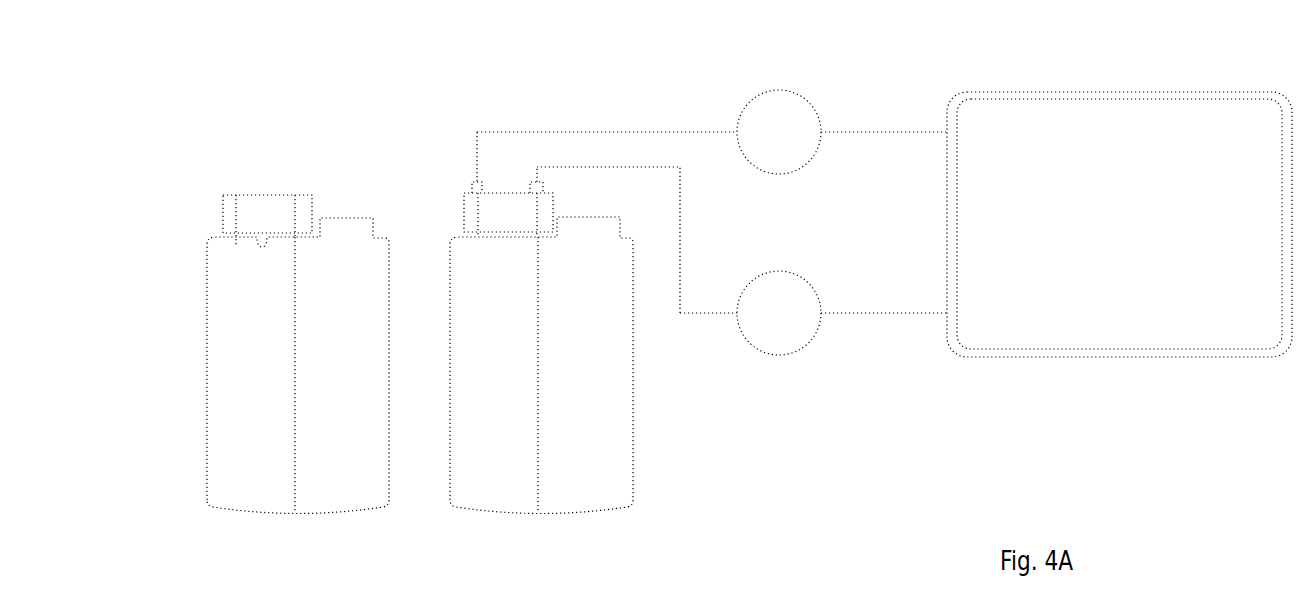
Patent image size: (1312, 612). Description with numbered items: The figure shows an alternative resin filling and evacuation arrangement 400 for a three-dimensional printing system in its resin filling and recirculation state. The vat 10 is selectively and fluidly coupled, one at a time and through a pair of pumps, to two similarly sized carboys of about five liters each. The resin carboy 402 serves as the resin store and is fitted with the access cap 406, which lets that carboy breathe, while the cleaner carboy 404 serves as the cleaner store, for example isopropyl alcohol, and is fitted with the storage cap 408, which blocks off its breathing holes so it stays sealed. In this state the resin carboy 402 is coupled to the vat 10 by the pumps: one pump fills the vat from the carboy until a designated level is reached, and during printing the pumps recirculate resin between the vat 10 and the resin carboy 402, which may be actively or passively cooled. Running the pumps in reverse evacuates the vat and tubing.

The resin filling and evacuation arrangement 400 is at (1074, 45).
The vat 10 is at (1128, 292).
The resin carboy 402 is at (608, 415).
The cleaner carboy 404 is at (206, 343).
The access cap 406 is at (523, 224).
The storage cap 408 is at (282, 224).